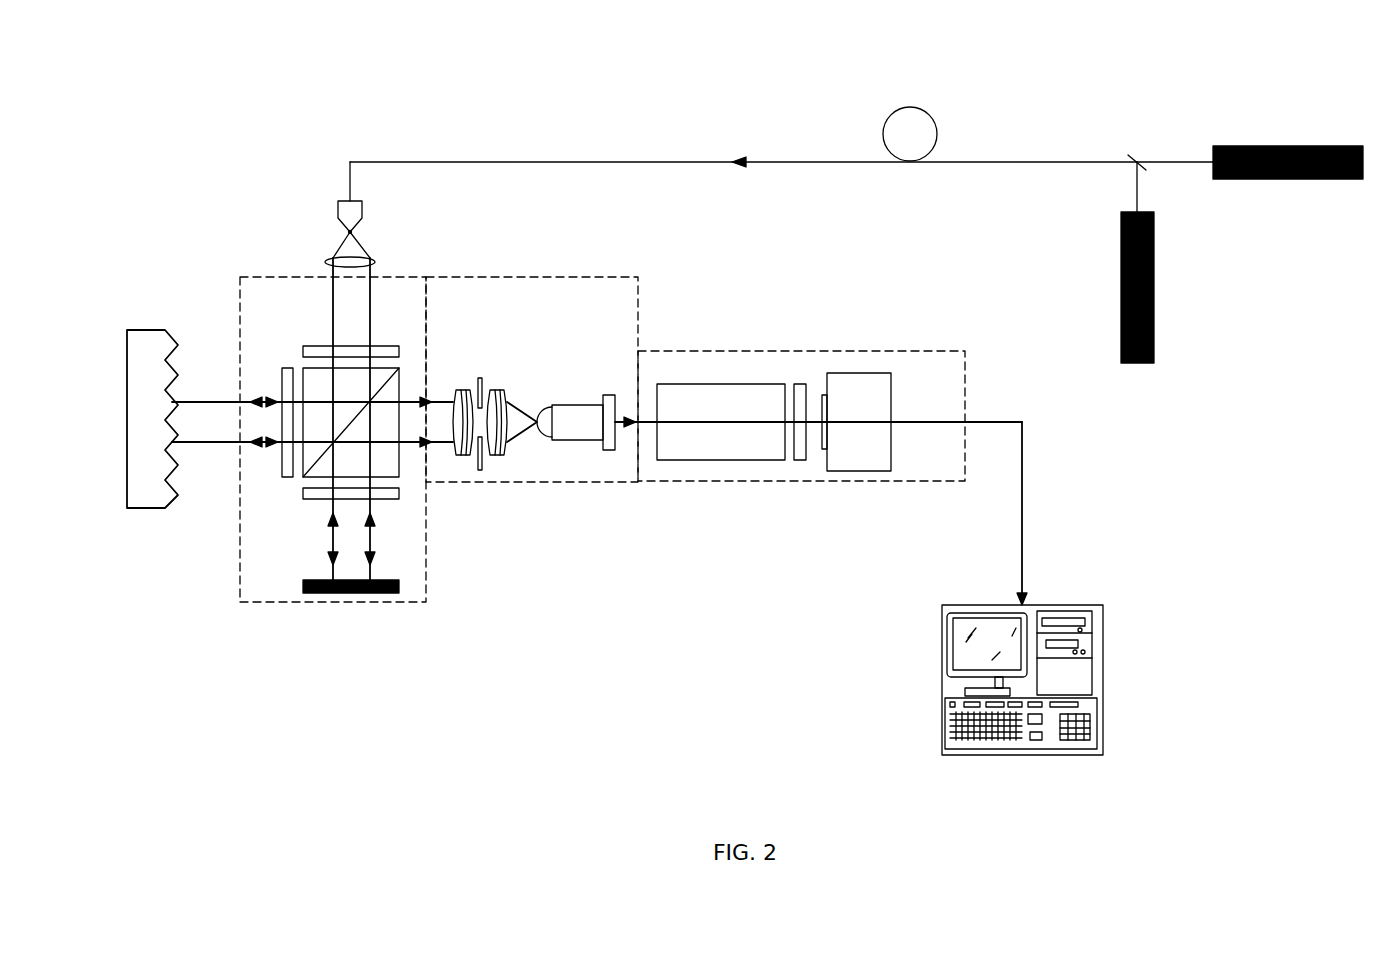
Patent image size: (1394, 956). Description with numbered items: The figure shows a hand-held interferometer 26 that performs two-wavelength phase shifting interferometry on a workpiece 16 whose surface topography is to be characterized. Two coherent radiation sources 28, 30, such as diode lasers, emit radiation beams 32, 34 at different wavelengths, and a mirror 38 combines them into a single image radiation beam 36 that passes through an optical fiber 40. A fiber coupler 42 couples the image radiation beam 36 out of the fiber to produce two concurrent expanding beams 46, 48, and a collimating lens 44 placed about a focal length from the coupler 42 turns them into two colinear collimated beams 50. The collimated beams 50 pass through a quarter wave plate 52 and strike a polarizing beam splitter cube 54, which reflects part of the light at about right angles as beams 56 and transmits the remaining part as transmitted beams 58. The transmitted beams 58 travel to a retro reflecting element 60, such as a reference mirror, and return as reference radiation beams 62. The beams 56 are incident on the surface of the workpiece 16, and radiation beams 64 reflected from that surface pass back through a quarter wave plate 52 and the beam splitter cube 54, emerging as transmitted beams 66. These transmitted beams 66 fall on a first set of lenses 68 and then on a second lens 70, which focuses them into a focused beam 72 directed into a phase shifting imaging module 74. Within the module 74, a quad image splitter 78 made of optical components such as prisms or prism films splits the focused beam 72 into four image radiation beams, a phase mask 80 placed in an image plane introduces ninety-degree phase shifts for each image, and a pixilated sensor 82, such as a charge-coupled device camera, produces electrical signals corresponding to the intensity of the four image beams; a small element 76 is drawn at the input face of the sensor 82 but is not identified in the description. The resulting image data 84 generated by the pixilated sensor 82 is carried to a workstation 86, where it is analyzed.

The workpiece 16 is at (163, 437).
The hand-held interferometer 26 is at (204, 84).
The radiation source 28 is at (1260, 148).
The radiation source 30 is at (1155, 255).
The radiation beam 32 is at (1190, 160).
The radiation beam 34 is at (1137, 192).
The image radiation beam 36 is at (1073, 160).
The mirror 38 is at (1139, 158).
The optical fiber 40 is at (937, 133).
The fiber coupler 42 is at (362, 207).
The collimating lens 44 is at (378, 262).
The expanding beam 46 is at (362, 243).
The expanding beam 48 is at (348, 234).
The collimated beams 50 is at (370, 318).
The quarter wave plate 52 is at (313, 346).
The polarizing beam splitter cube 54 is at (303, 471).
The reflected beams 56 is at (256, 440).
The transmitted beams 58 is at (340, 565).
The retro reflecting element 60 is at (320, 593).
The reference radiation beams 62 is at (338, 522).
The radiation beams 64 is at (272, 440).
The transmitted beams 66 is at (428, 442).
The first set of lenses 68 is at (463, 455).
The second lens 70 is at (575, 405).
The focused beam 72 is at (630, 418).
The phase shifting imaging module 74 is at (920, 351).
The detector element 76 is at (862, 424).
The quad image splitter 78 is at (722, 384).
The phase mask 80 is at (800, 384).
The pixilated sensor 82 is at (853, 373).
The image data 84 is at (1023, 500).
The workstation 86 is at (1104, 678).